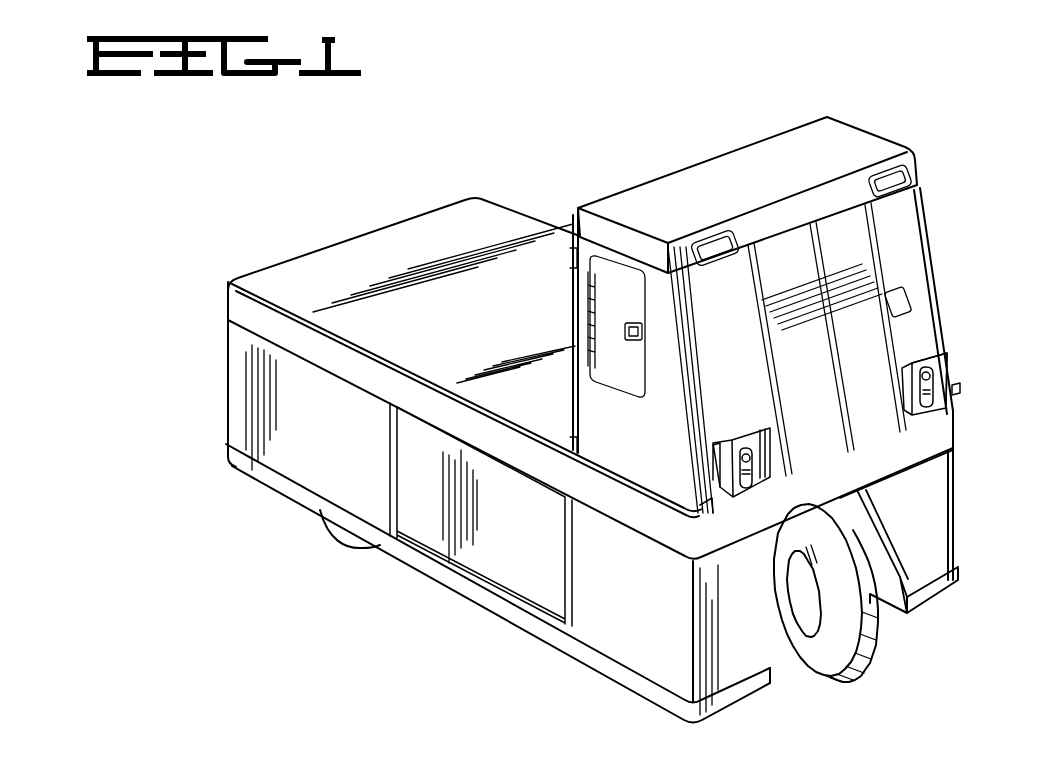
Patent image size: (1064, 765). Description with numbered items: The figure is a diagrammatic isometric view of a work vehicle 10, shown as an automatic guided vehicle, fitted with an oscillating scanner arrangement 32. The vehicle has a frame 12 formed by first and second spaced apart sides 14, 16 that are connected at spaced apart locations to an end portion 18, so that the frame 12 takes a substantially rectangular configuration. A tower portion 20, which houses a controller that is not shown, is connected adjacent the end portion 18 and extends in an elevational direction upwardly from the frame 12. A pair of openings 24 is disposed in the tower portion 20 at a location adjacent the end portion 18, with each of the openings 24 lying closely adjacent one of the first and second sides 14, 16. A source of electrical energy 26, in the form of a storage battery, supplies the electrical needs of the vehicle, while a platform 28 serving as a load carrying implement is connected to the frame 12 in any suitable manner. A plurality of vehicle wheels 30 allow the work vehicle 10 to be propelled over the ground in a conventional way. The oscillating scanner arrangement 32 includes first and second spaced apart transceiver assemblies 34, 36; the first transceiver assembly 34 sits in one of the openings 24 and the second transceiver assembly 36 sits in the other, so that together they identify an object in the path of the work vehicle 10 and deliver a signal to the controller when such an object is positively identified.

The work vehicle 10 is at (590, 168).
The frame 12 is at (953, 558).
The first side 14 is at (600, 625).
The second side 16 is at (955, 510).
The end portion 18 is at (927, 480).
The tower portion 20 is at (935, 254).
The openings 24 is at (713, 450).
The source of electrical energy 26 is at (520, 540).
The platform 28 is at (498, 325).
The vehicle wheels 30 is at (860, 640).
The oscillating scanner arrangement 32 is at (695, 515).
The first transceiver assembly 34 is at (770, 437).
The second transceiver assembly 36 is at (947, 368).